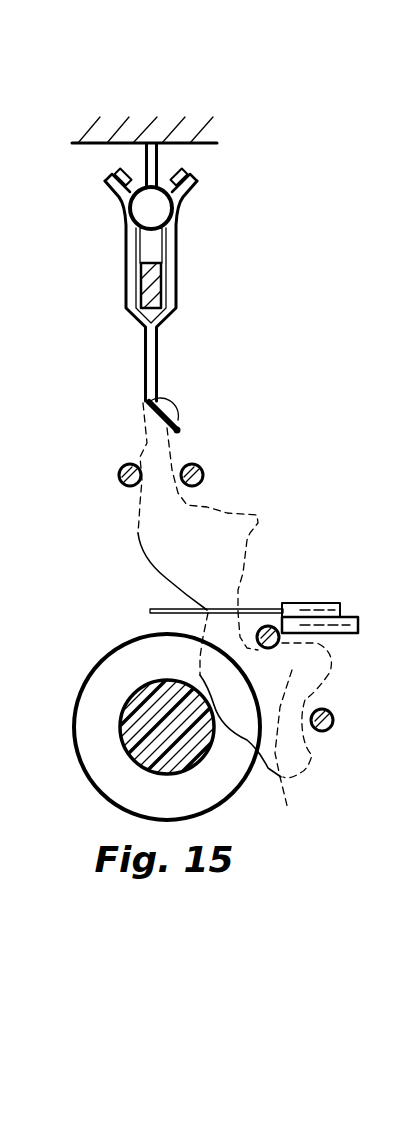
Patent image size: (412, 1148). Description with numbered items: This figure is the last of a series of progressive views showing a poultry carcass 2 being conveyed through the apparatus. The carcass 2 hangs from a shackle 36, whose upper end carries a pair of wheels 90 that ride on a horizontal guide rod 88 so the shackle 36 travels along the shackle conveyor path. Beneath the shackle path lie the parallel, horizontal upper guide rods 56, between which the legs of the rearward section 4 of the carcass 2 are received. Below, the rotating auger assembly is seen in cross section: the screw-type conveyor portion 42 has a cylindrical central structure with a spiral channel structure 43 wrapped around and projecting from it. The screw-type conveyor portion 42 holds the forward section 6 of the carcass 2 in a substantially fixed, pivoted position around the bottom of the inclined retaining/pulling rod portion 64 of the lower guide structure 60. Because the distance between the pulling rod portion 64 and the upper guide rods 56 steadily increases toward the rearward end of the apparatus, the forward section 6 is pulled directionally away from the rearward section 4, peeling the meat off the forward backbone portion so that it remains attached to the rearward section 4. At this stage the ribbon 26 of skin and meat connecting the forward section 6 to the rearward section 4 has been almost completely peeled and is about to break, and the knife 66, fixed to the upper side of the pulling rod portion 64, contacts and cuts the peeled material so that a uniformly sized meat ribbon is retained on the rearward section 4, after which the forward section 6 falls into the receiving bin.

The poultry carcass 2 is at (212, 556).
The rearward section 4 is at (146, 490).
The forward section 6 is at (288, 753).
The ribbon of skin tissue and meat 26 is at (243, 597).
The shackle 36 is at (178, 256).
The screw-type conveyor portion 42 is at (158, 735).
The spiral channel structure 43 is at (127, 780).
The upper guide rods 56 is at (119, 470).
The lower guide structure 60 is at (333, 730).
The inclined retaining/pulling rod portion 64 is at (275, 641).
The knife 66 is at (297, 608).
The horizontal guide rod 88 is at (151, 208).
The wheels 90 is at (117, 175).